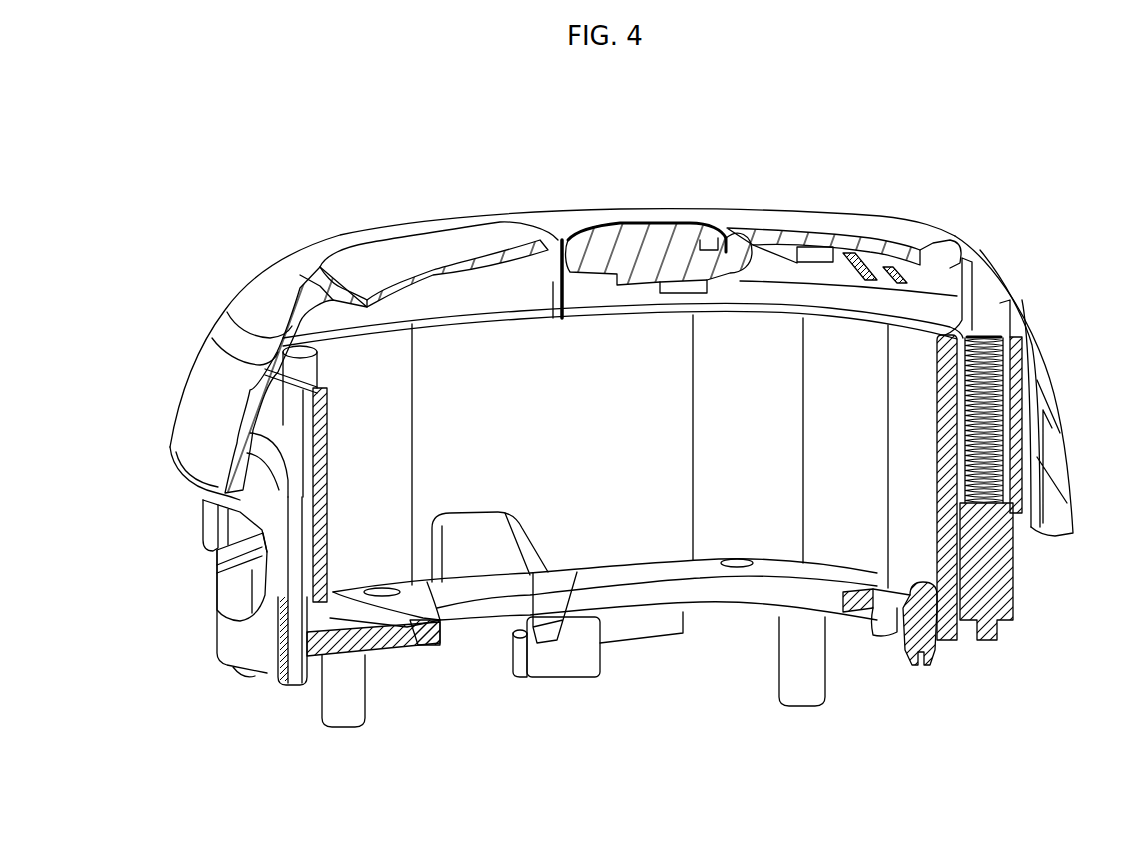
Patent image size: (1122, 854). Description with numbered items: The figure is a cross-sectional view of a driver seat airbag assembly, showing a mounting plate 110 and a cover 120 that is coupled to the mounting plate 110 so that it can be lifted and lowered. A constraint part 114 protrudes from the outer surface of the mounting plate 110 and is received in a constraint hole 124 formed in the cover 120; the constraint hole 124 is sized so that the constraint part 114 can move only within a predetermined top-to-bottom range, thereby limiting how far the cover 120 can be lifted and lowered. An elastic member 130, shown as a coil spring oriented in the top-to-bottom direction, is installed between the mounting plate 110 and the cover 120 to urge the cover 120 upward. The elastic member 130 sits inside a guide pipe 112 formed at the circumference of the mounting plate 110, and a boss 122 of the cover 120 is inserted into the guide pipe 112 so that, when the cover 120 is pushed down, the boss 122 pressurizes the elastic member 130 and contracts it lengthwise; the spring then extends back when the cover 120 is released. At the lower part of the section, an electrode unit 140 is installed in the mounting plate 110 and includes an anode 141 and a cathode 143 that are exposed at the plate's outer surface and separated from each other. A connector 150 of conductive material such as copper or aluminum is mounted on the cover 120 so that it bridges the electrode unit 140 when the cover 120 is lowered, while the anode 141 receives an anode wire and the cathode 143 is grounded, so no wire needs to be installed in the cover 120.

The mounting plate 110 is at (210, 622).
The guide pipe 112 is at (937, 375).
The constraint part 114 is at (243, 580).
The cover 120 is at (250, 270).
The boss 122 is at (987, 313).
The constraint hole 124 is at (233, 513).
The elastic member 130 is at (1000, 357).
The electrode unit 140 is at (622, 651).
The anode 141 is at (360, 640).
The cathode 143 is at (333, 643).
The connector 150 is at (273, 675).